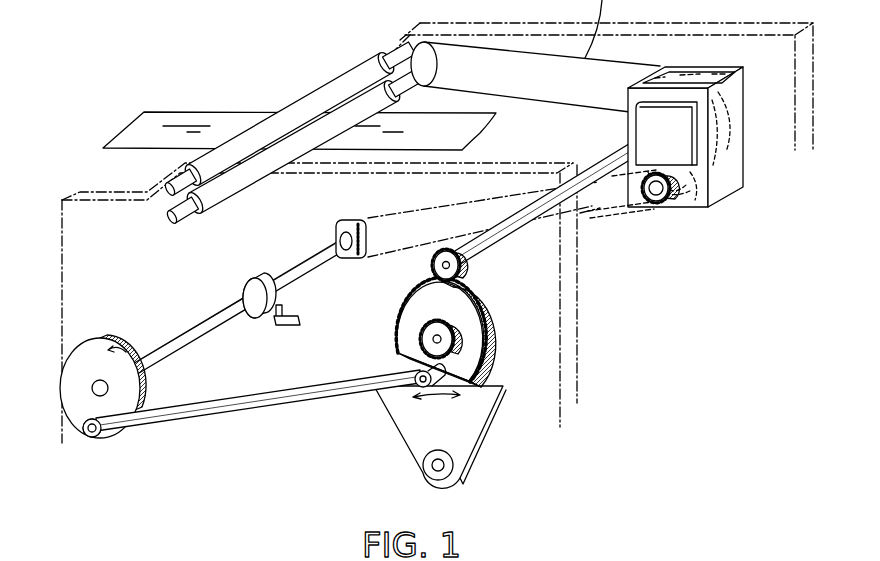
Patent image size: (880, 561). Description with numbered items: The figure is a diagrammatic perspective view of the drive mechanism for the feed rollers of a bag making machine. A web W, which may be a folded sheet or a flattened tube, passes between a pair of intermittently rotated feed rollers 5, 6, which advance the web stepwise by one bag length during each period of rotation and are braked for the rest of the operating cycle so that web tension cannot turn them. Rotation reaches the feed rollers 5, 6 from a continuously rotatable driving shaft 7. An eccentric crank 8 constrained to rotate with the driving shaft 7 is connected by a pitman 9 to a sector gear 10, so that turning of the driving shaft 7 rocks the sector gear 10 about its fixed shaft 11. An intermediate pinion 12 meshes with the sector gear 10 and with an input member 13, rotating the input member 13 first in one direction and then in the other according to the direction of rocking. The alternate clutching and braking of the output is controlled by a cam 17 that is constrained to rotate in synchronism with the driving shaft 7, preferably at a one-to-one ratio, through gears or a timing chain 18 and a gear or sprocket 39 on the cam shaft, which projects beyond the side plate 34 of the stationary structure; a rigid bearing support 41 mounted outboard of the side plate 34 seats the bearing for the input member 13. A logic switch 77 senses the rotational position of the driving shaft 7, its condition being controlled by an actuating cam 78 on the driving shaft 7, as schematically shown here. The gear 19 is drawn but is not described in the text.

The web W is at (193, 127).
The feed roller 5 is at (220, 193).
The feed roller 6 is at (273, 127).
The driving shaft 7 is at (210, 317).
The eccentric crank 8 is at (92, 440).
The pitman 9 is at (293, 403).
The sector gear 10 is at (408, 437).
The fixed shaft 11 is at (433, 473).
The intermediate pinion 12 is at (398, 330).
The input member 13 is at (645, 125).
The cam 17 is at (713, 178).
The timing chain 18 is at (613, 213).
The pinion gear 19 is at (428, 267).
The side plate 34 is at (688, 202).
The gear or sprocket 39 is at (653, 207).
The bearing support 41 is at (697, 140).
The logic switch 77 is at (283, 327).
The actuating cam 78 is at (247, 277).